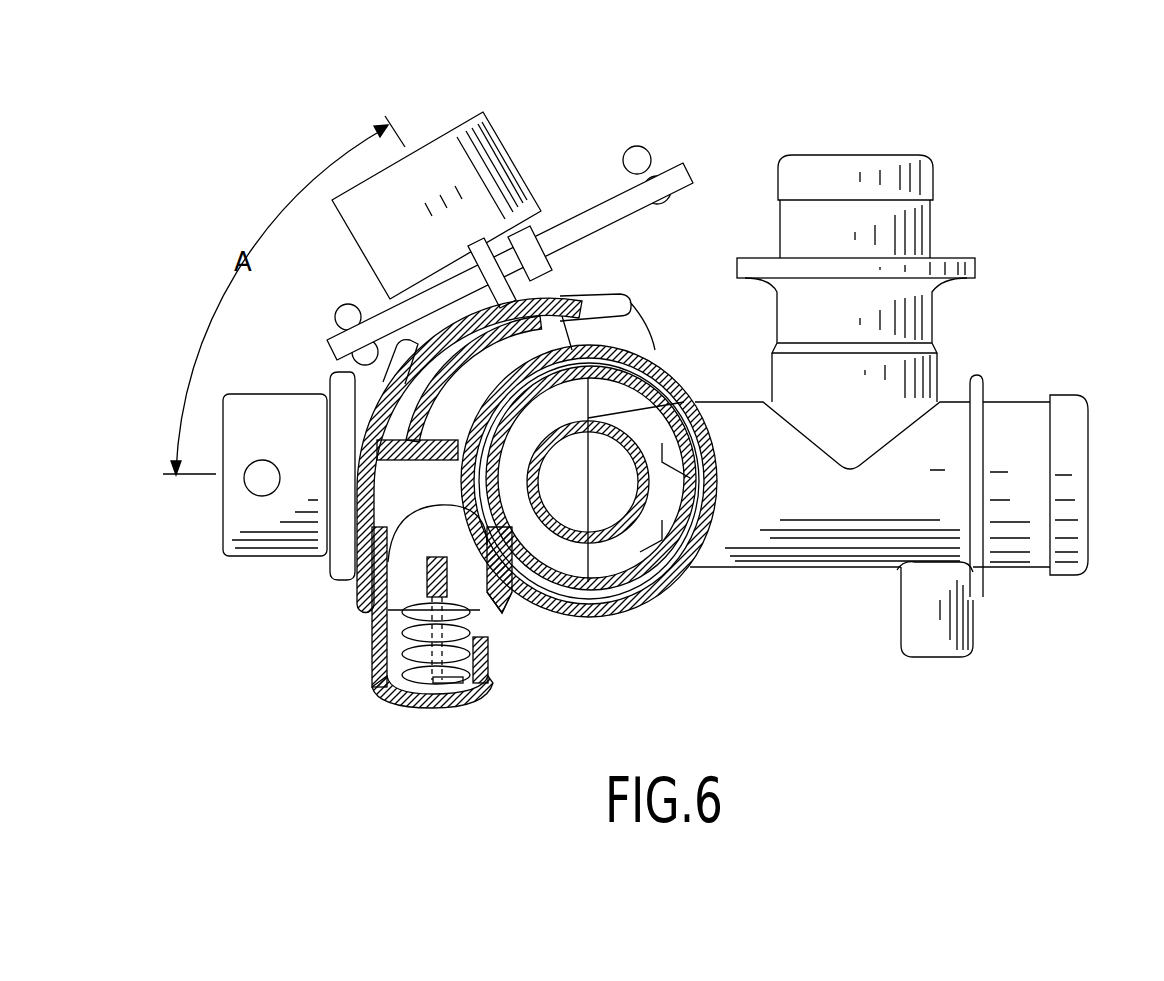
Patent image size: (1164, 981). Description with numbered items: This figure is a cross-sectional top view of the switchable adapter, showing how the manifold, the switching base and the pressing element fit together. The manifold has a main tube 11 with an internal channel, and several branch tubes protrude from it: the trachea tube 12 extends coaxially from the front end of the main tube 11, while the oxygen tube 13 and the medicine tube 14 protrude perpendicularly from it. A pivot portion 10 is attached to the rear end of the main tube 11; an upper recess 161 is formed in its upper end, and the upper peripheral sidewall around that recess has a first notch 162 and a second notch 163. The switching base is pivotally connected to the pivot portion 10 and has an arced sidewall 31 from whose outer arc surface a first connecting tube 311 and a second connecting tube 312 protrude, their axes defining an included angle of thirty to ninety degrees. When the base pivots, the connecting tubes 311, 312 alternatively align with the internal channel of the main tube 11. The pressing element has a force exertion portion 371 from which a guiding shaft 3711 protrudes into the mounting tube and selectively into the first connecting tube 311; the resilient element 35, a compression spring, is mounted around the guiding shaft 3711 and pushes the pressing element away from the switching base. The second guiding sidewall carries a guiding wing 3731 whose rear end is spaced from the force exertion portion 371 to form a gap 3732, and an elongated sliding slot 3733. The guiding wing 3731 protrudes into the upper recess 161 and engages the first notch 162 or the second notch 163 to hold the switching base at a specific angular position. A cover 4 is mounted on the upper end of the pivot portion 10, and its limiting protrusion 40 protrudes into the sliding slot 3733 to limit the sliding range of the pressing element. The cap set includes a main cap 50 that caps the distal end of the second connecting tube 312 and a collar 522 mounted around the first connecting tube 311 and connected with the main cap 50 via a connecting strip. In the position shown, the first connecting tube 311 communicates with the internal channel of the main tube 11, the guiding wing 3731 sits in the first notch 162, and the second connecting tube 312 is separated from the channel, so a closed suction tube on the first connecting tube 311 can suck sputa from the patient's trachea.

The cover 4 is at (700, 583).
The pivot portion 10 is at (715, 490).
The main tube 11 is at (817, 565).
The trachea tube 12 is at (1078, 418).
The oxygen tube 13 is at (800, 163).
The medicine tube 14 is at (963, 625).
The arced sidewall 31 is at (665, 390).
The first connecting tube 311 is at (238, 507).
The second connecting tube 312 is at (538, 293).
The resilient element 35 is at (460, 683).
The force exertion portion 371 is at (401, 703).
The guiding shaft 3711 is at (425, 685).
The guiding wing 3731 is at (503, 613).
The gap 3732 is at (493, 636).
The sliding slot 3733 is at (375, 676).
The limiting protrusion 40 is at (430, 585).
The main cap 50 is at (490, 108).
The upper recess 161 is at (543, 419).
The first notch 162 is at (500, 526).
The second notch 163 is at (615, 604).
The collar 522 is at (345, 562).